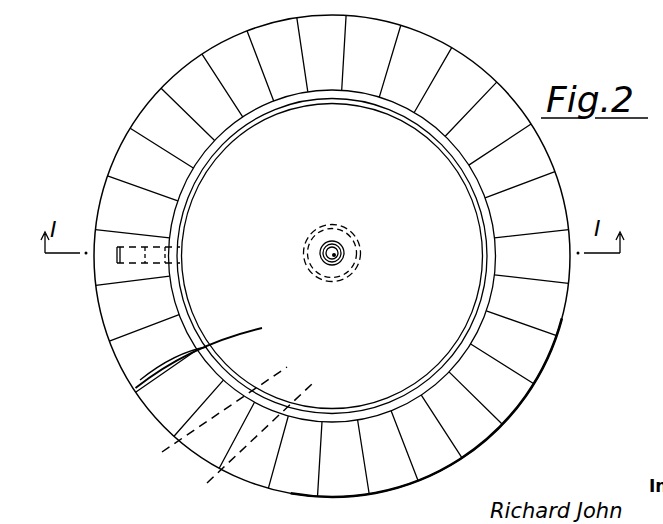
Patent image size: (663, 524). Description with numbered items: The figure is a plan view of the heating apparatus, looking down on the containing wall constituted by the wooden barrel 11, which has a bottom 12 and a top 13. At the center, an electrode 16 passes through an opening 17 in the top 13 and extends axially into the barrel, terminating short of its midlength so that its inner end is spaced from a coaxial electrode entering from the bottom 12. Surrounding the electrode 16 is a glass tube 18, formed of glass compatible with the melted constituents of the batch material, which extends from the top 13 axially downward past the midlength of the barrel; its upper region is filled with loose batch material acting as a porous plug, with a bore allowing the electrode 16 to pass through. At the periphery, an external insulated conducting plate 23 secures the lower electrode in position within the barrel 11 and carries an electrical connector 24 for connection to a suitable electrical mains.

The wooden barrel 11 is at (175, 107).
The bottom 12 is at (211, 424).
The top 13 is at (136, 388).
The electrode 16 is at (343, 255).
The opening 17 is at (320, 253).
The glass tube 18 is at (353, 238).
The external insulated conducting plate 23 is at (249, 448).
The electrical connector 24 is at (132, 268).